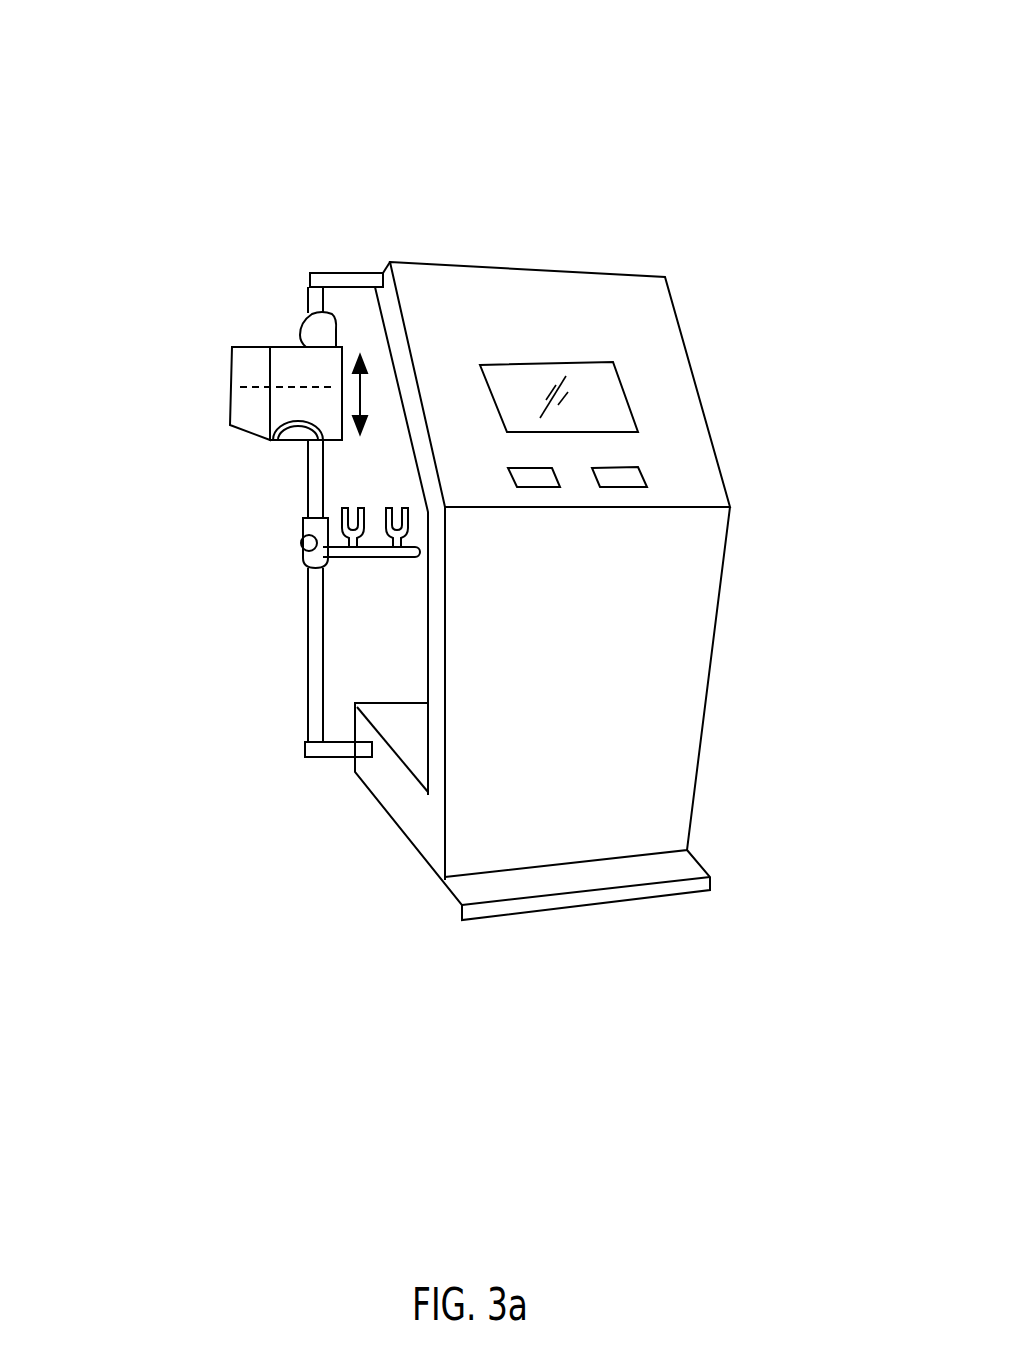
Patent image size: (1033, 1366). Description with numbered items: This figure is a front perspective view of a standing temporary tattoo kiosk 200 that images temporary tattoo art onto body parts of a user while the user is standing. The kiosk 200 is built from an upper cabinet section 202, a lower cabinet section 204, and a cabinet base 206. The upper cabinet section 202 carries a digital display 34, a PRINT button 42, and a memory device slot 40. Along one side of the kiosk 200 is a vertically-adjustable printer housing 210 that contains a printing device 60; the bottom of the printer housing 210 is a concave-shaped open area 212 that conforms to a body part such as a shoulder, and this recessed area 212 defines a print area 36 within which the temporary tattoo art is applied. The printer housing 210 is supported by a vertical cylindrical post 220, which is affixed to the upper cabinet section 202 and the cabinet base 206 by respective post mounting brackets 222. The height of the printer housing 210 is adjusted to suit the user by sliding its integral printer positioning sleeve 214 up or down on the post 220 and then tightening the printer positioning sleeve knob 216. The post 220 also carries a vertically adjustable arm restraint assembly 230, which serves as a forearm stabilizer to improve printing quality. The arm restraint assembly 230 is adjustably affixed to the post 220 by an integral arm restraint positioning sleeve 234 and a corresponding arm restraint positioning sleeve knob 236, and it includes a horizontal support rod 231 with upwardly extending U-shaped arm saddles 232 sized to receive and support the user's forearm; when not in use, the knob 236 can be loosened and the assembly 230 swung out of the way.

The standing temporary tattoo kiosk 200 is at (803, 152).
The upper cabinet section 202 is at (675, 305).
The lower cabinet section 204 is at (715, 647).
The cabinet base 206 is at (418, 820).
The digital display 34 is at (628, 393).
The memory device slot 40 is at (650, 470).
The PRINT button 42 is at (562, 488).
The printing device 60 is at (302, 387).
The printer housing 210 is at (255, 365).
The concave-shaped open area 212 is at (300, 422).
The print area 36 is at (298, 430).
The printer positioning sleeve 214 is at (307, 318).
The printer positioning sleeve knob 216 is at (303, 328).
The vertical cylindrical post 220 is at (320, 302).
The post mounting brackets 222 is at (348, 272).
The arm restraint assembly 230 is at (400, 562).
The horizontal support rod 231 is at (368, 560).
The U-shaped arm saddles 232 is at (387, 510).
The arm restraint positioning sleeve 234 is at (302, 525).
The arm restraint positioning sleeve knob 236 is at (300, 545).